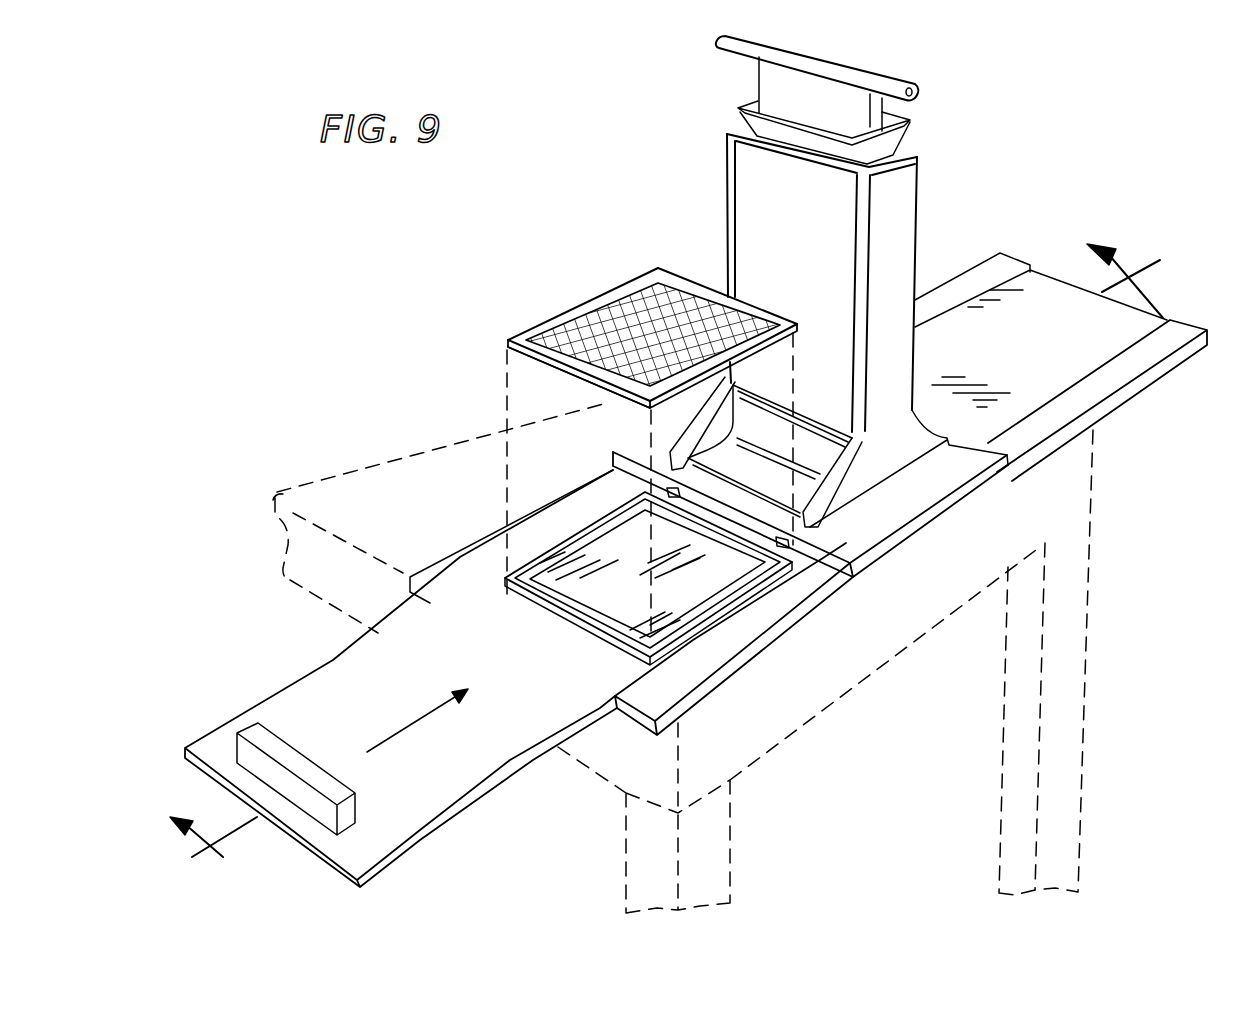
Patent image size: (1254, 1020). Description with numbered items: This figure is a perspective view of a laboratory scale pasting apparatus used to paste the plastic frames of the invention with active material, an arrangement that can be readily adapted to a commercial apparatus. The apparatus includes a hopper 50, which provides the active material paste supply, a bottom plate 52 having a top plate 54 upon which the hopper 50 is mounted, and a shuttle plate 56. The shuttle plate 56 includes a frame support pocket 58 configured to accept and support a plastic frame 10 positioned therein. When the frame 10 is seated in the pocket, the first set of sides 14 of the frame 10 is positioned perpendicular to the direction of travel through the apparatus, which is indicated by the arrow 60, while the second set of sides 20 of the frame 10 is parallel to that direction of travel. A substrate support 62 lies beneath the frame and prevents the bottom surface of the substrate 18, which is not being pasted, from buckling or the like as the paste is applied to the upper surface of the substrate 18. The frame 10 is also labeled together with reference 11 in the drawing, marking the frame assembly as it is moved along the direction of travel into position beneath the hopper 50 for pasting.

The plastic frame 10 is at (609, 324).
The screen assembly movement direction 11 is at (698, 574).
The first set of sides 14 is at (540, 350).
The substrate 18 is at (630, 298).
The second set of sides 20 is at (530, 338).
The hopper 50 is at (719, 181).
The bottom plate 52 is at (1133, 392).
The top plate 54 is at (978, 486).
The shuttle plate 56 is at (512, 685).
The frame support pocket 58 is at (549, 543).
The arrow 60 is at (413, 723).
The substrate support 62 is at (698, 605).